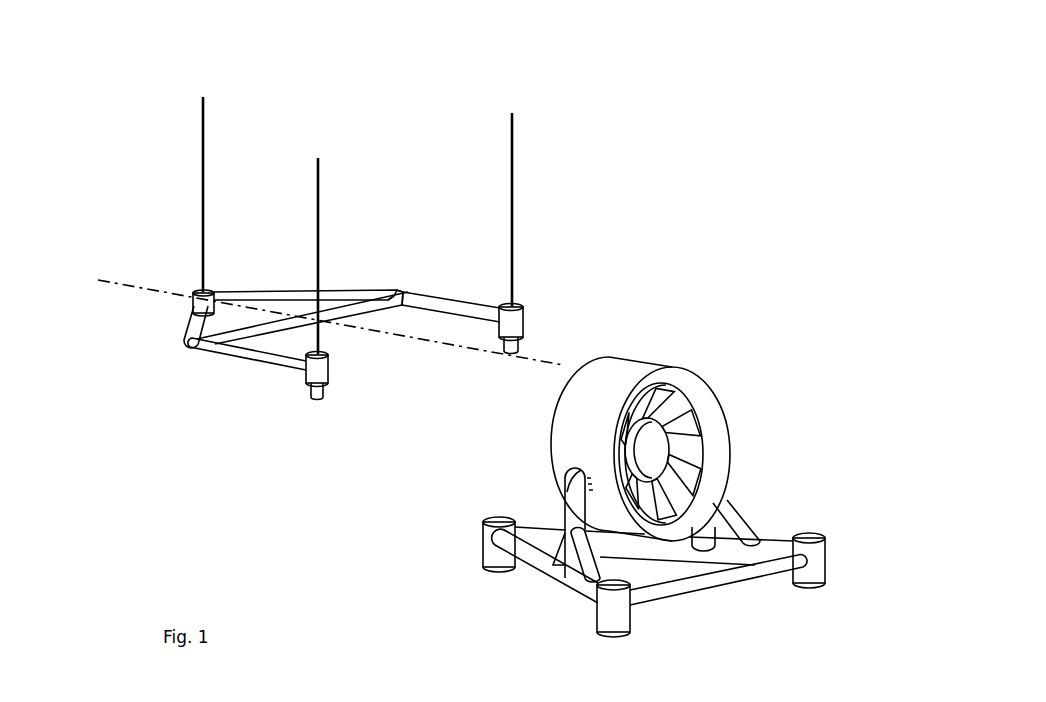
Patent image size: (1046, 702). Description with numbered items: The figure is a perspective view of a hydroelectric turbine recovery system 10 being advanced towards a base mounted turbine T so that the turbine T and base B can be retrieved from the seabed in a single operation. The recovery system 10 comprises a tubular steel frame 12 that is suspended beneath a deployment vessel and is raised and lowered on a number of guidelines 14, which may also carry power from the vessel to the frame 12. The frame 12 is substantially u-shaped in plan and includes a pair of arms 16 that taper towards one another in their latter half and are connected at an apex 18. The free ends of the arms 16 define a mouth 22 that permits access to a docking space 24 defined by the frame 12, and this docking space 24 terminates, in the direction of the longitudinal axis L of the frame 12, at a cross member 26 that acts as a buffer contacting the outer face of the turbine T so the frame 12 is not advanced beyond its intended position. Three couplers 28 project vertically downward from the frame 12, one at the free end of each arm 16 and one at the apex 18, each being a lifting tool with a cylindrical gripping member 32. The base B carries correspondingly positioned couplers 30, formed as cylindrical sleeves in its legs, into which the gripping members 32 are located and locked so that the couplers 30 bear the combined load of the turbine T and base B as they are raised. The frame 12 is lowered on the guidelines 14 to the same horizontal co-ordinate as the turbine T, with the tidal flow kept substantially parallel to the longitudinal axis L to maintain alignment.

The hydroelectric turbine recovery system 10 is at (653, 150).
The frame 12 is at (283, 292).
The guidelines 14 is at (203, 143).
The arms 16 is at (238, 353).
The apex 18 is at (203, 303).
The mouth 22 is at (377, 358).
The docking space 24 is at (405, 318).
The cross member 26 is at (362, 306).
The couplers 28 is at (305, 382).
The couplers 30 is at (503, 522).
The gripping member 32 is at (202, 335).
The longitudinal axis L is at (98, 280).
The turbine T is at (708, 393).
The base B is at (708, 582).